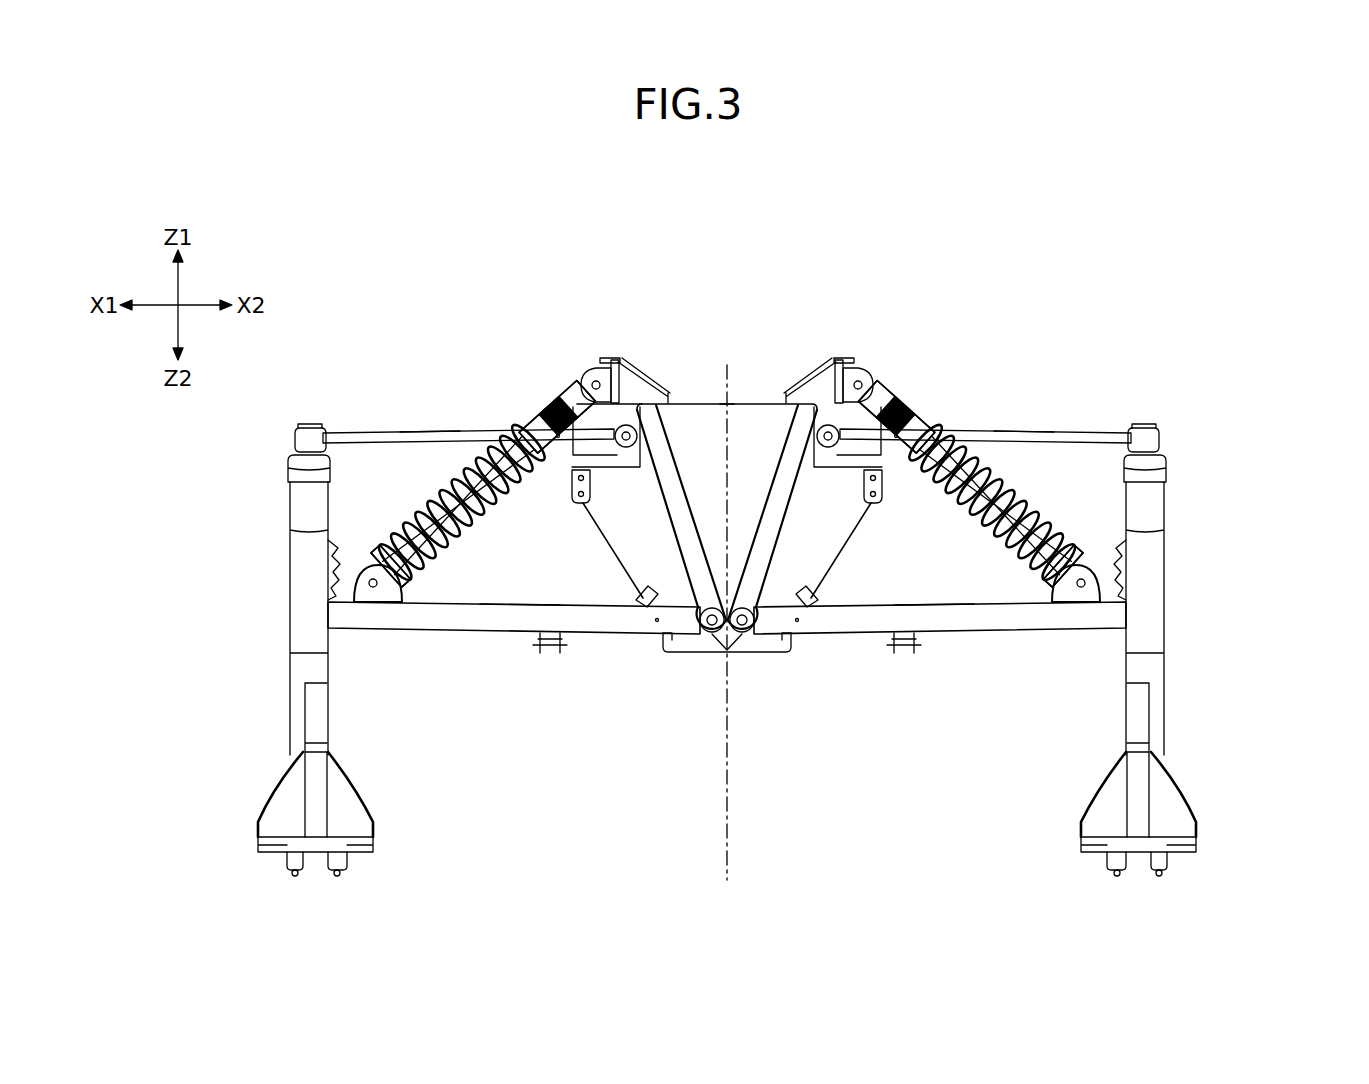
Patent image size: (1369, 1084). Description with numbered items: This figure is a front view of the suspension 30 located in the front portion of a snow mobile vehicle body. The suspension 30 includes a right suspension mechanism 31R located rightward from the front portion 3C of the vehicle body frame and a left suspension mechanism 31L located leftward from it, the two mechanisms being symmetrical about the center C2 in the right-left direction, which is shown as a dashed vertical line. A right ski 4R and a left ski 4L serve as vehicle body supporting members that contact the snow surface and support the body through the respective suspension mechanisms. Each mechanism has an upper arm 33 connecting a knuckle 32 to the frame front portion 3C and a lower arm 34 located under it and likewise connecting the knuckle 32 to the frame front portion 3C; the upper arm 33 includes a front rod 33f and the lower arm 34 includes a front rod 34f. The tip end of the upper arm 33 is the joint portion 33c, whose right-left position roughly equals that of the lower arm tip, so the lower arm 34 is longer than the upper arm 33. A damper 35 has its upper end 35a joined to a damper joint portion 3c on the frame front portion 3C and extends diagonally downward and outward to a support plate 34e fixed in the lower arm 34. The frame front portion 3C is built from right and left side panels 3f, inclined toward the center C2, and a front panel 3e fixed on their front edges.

The suspension 30 is at (970, 268).
The right suspension mechanism 31R is at (508, 407).
The left suspension mechanism 31L is at (957, 412).
The knuckle 32 is at (717, 665).
The upper arm 33 is at (772, 392).
The front rod 33f is at (423, 437).
The joint portion 33c is at (1158, 441).
The lower arm 34 is at (727, 657).
The front rod 34f is at (518, 625).
The support plate 34e is at (381, 600).
The damper 35 is at (453, 557).
The upper end of the damper 35a is at (589, 378).
The damper joint portion 3c is at (613, 380).
The front panel 3e is at (727, 478).
The side panel 3f is at (637, 548).
The front portion of the vehicle body frame 3C is at (738, 398).
The left ski 4L is at (258, 828).
The right ski 4R is at (1188, 830).
The center C2 is at (726, 643).